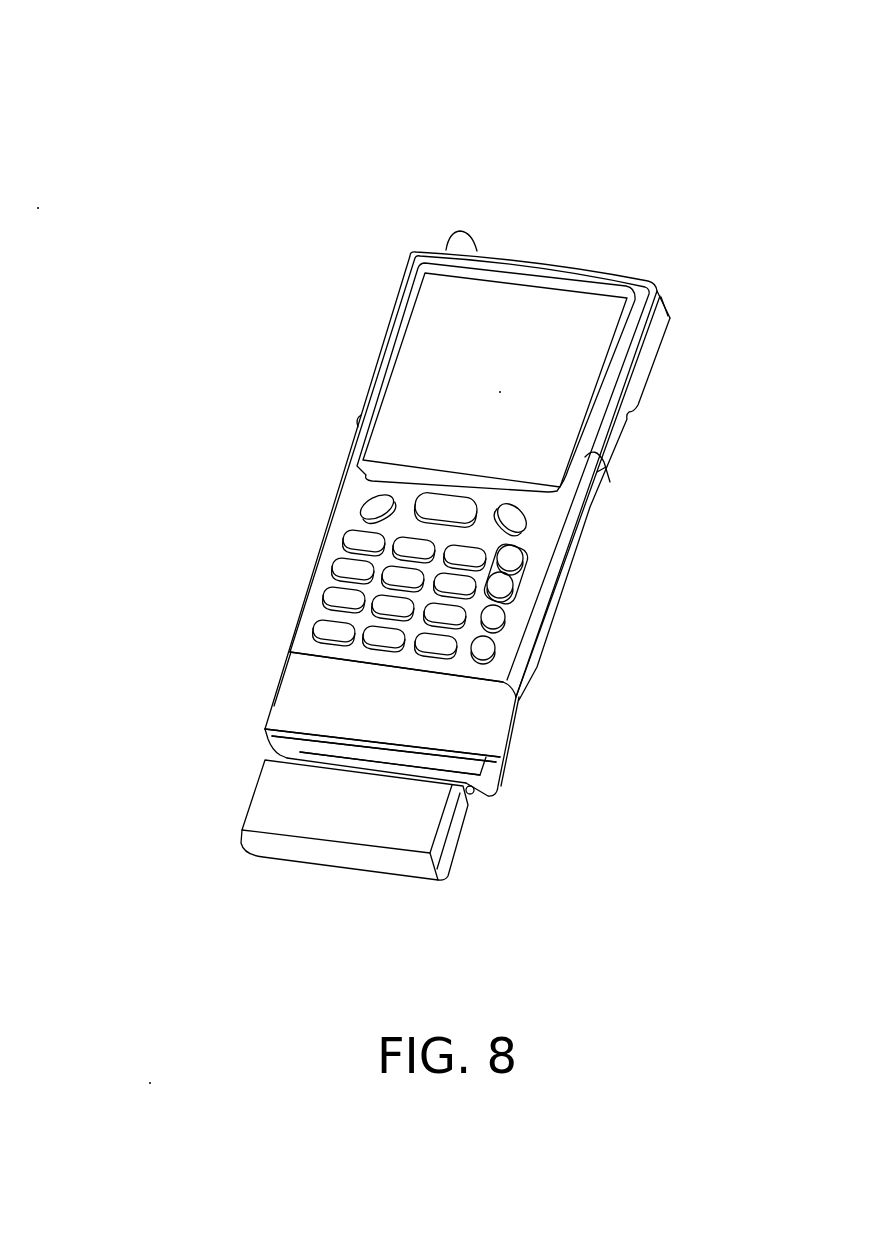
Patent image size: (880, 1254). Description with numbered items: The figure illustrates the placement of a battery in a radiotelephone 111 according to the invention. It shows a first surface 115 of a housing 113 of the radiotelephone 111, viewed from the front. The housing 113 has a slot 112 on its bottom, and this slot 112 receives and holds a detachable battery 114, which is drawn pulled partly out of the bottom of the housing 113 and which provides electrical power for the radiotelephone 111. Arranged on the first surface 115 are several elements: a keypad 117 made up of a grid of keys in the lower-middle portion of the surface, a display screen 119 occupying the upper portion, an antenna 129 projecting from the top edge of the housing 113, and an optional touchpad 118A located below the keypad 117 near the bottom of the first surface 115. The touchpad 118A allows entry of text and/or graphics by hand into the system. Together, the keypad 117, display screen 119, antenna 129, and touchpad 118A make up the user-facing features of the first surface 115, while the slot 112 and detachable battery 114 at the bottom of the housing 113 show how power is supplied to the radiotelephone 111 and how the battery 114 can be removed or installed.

The radiotelephone 111 is at (712, 115).
The slot 112 is at (332, 752).
The housing 113 is at (337, 537).
The detachable battery 114 is at (395, 826).
The first surface 115 is at (195, 705).
The keypad 117 is at (330, 627).
The touchpad 118A is at (430, 712).
The display screen 119 is at (527, 390).
The antenna 129 is at (450, 242).